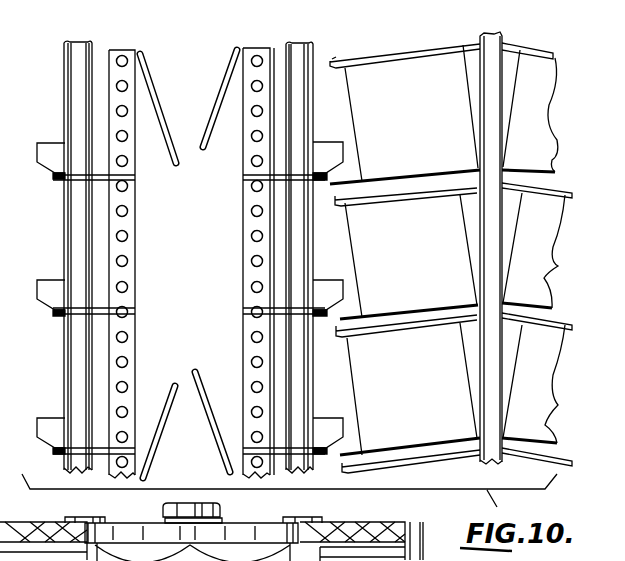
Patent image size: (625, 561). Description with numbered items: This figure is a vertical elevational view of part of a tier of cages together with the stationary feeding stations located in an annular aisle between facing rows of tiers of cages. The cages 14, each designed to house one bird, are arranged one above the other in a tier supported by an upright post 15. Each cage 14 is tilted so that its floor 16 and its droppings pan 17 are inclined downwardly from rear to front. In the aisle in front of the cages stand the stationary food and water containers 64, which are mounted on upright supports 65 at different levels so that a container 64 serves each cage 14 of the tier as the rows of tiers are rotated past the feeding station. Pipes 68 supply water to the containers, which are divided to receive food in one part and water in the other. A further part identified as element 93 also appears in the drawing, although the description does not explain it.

The cage 14 is at (372, 73).
The upright post 15 is at (493, 452).
The floor 16 is at (452, 172).
The droppings pan 17 is at (423, 52).
The food and water container 64 is at (52, 147).
The upright support 65 is at (132, 198).
The pipe 68 is at (92, 50).
The cap 93 is at (167, 510).